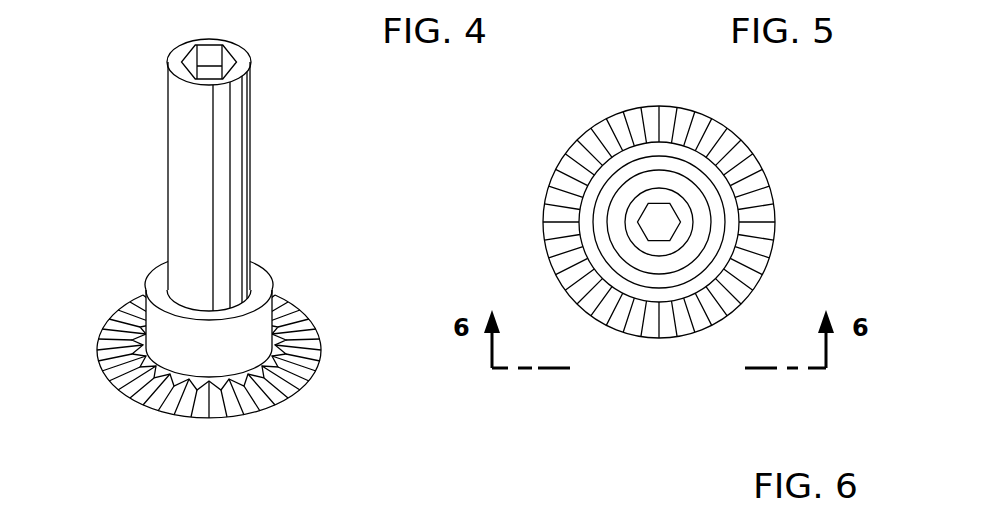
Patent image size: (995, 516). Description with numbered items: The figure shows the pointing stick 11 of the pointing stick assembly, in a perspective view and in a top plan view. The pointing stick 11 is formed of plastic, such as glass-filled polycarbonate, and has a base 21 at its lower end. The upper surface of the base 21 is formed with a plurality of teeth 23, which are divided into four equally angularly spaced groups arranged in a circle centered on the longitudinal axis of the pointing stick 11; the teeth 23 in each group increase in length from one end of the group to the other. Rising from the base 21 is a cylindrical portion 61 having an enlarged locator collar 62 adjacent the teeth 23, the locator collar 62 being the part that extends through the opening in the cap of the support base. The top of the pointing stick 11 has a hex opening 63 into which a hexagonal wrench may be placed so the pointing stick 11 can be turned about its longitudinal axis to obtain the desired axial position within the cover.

In FIG. 4, the pointing stick 11 is at (188, 233).
In FIG. 5, the pointing stick 11 is at (713, 202).
In FIG. 4, the base 21 is at (148, 407).
In FIG. 5, the base 21 is at (659, 222).
In FIG. 4, the teeth 23 is at (117, 308).
In FIG. 5, the teeth 23 is at (767, 263).
In FIG. 4, the cylindrical portion 61 is at (252, 152).
In FIG. 5, the cylindrical portion 61 is at (663, 188).
In FIG. 6, the cylindrical portion 61 is at (688, 504).
In FIG. 4, the locator collar 62 is at (265, 270).
In FIG. 5, the locator collar 62 is at (659, 222).
In FIG. 4, the hex opening 63 is at (235, 57).
In FIG. 5, the hex opening 63 is at (667, 211).